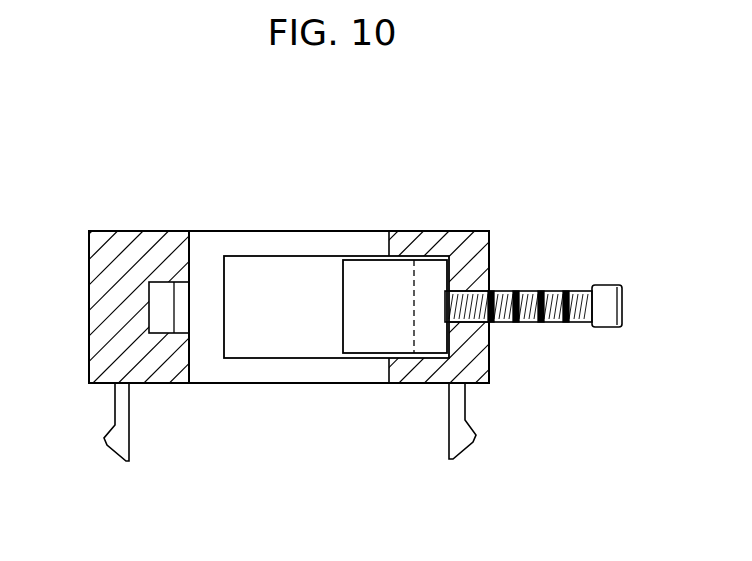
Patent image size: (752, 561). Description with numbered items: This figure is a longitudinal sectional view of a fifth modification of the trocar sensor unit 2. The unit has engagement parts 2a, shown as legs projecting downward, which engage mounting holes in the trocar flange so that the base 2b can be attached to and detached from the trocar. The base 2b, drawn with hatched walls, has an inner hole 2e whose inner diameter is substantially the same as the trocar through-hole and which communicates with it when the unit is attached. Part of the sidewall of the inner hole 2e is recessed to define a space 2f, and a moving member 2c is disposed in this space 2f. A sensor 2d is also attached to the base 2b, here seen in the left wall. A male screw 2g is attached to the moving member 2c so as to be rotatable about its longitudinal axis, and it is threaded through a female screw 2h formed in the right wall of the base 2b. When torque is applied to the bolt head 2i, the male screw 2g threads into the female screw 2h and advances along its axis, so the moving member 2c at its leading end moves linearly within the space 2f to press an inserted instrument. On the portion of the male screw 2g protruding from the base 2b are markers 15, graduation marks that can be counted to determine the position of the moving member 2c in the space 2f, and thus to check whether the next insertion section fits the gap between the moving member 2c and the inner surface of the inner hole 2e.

The trocar sensor unit 2 is at (585, 206).
The engagement parts 2a is at (115, 458).
The base 2b is at (422, 232).
The moving member 2c is at (363, 258).
The sensor 2d is at (149, 300).
The inner hole 2e is at (190, 368).
The space 2f is at (256, 261).
The male screw 2g is at (577, 323).
The female screw 2h is at (457, 296).
The bolt head 2i is at (623, 304).
The markers 15 is at (491, 290).